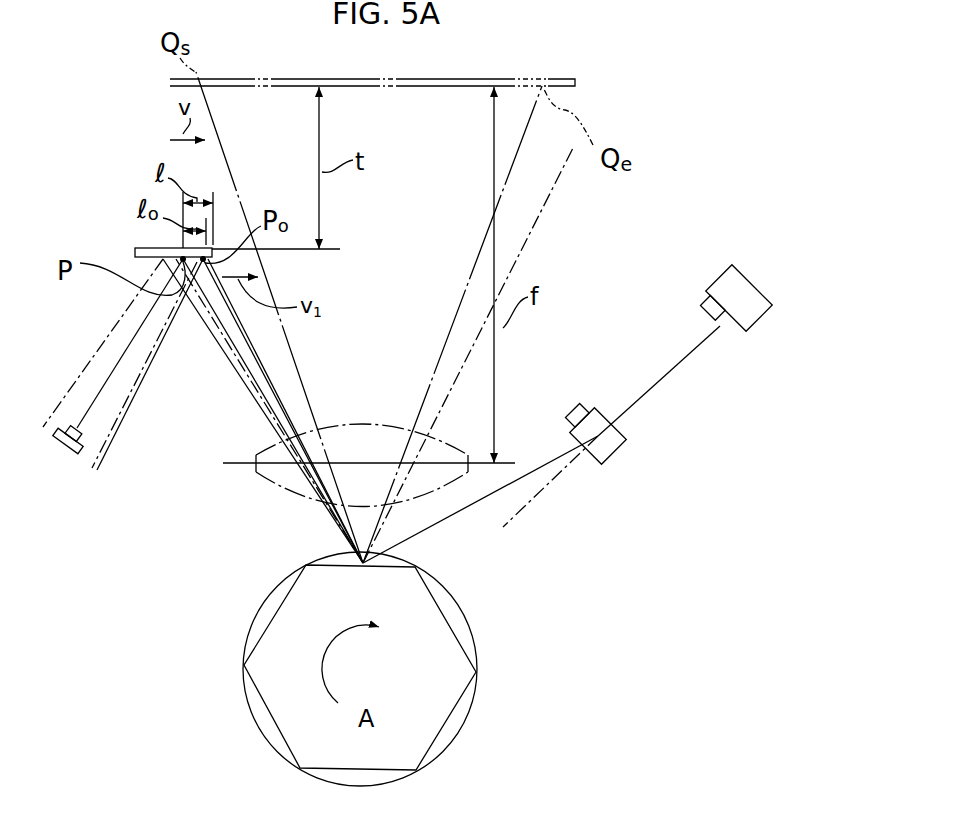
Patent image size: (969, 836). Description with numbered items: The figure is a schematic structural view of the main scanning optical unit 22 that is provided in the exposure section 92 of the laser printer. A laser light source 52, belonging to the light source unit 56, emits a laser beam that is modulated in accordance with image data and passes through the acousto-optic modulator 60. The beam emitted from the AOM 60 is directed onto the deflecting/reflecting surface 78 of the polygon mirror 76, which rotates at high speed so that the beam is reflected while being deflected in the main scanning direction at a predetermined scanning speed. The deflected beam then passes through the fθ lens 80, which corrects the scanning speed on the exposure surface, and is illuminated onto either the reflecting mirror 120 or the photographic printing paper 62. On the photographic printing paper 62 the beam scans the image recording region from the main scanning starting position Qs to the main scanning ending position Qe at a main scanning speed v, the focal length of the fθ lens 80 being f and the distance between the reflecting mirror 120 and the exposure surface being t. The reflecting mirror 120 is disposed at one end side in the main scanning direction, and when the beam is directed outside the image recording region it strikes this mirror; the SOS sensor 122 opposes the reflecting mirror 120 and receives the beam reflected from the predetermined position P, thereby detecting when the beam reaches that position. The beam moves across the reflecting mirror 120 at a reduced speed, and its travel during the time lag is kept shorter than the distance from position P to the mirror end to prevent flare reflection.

The main scanning optical unit 22 is at (696, 208).
The laser light source 52 is at (753, 318).
The light source unit 56 is at (683, 410).
The acousto-optic modulator 60 is at (607, 452).
The photographic printing paper 62 is at (522, 80).
The polygon mirror 76 is at (455, 672).
The deflecting/reflecting surface 78 is at (448, 716).
The fθ lens 80 is at (268, 482).
The exposure section 92 is at (720, 90).
The reflecting mirror 120 is at (137, 248).
The SOS sensor 122 is at (72, 455).